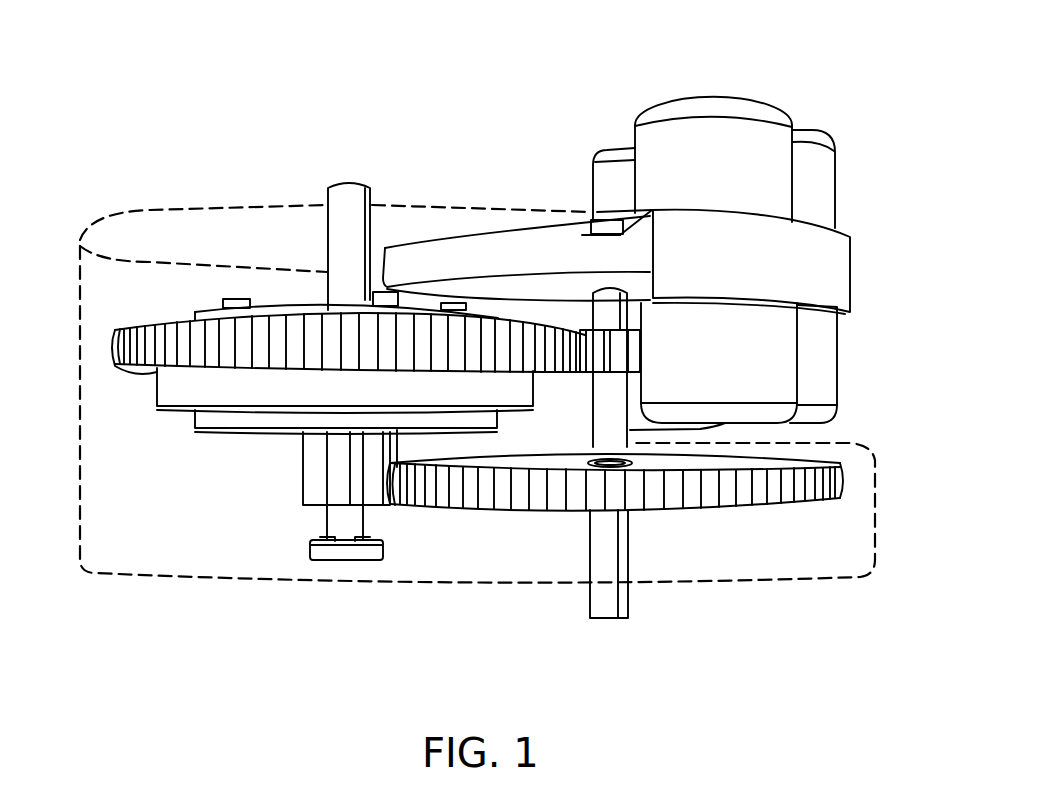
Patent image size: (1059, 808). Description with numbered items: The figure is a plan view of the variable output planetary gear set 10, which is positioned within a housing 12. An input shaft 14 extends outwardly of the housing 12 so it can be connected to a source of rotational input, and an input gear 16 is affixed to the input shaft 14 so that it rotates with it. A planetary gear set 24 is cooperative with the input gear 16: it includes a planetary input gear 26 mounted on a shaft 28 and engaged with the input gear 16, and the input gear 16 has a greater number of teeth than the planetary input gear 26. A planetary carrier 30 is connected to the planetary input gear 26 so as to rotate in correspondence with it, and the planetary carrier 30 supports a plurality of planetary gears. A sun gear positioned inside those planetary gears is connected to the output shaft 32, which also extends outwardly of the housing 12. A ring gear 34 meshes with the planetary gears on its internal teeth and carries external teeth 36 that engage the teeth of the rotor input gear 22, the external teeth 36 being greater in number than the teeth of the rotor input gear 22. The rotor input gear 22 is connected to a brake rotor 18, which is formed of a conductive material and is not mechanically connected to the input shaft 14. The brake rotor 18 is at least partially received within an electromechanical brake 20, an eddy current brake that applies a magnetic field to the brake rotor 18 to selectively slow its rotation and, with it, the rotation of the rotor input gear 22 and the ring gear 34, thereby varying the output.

The variable output planetary gear set 10 is at (833, 58).
The housing 12 is at (178, 210).
The input shaft 14 is at (625, 600).
The input gear 16 is at (837, 467).
The brake rotor 18 is at (492, 250).
The electromechanical brake 20 is at (811, 218).
The rotor input gear 22 is at (593, 357).
The planetary gear set 24 is at (171, 472).
The planetary input gear 26 is at (302, 483).
The shaft 28 is at (350, 528).
The planetary carrier 30 is at (278, 432).
The output shaft 32 is at (327, 200).
The ring gear 34 is at (308, 276).
The external teeth 36 is at (147, 328).